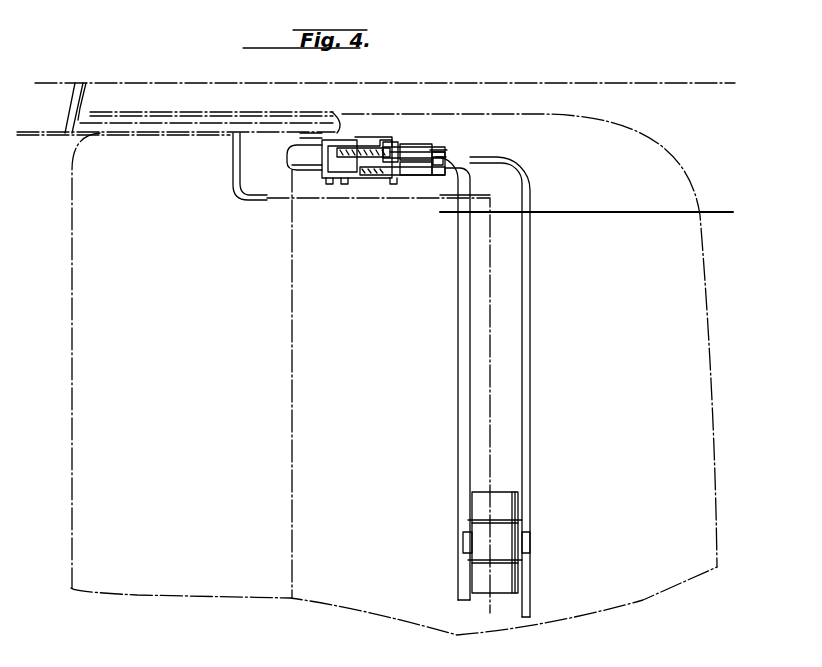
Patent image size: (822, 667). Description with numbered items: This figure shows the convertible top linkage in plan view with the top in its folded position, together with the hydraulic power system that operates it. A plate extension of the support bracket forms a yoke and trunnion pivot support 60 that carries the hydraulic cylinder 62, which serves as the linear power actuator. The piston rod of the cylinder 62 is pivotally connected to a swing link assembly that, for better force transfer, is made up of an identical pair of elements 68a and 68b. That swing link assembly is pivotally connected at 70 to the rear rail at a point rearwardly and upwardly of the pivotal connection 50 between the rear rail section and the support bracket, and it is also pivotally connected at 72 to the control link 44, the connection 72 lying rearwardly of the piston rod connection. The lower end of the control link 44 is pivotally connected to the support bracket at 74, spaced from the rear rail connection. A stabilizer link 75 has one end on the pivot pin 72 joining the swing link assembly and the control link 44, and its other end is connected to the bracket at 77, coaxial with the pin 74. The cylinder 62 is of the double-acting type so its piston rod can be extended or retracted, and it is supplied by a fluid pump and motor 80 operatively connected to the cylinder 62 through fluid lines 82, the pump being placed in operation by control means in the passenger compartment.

The control link 44 is at (424, 176).
The pivotal connection 50 is at (355, 142).
The yoke and trunnion pivot support 60 is at (362, 180).
The hydraulic cylinder 62 is at (290, 163).
The swing link element 68a is at (417, 175).
The swing link element 68b is at (423, 140).
The pivotal connection 70 is at (360, 168).
The pivotal connection 72 is at (434, 176).
The pivotal connection 74 is at (390, 178).
The stabilizer link 75 is at (412, 147).
The pivotal connection 77 is at (387, 142).
The fluid pump and motor 80 is at (512, 505).
The fluid lines 82 is at (470, 415).